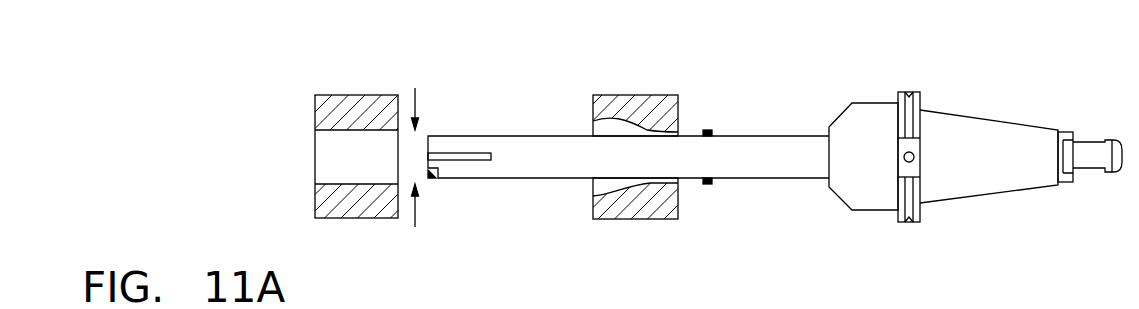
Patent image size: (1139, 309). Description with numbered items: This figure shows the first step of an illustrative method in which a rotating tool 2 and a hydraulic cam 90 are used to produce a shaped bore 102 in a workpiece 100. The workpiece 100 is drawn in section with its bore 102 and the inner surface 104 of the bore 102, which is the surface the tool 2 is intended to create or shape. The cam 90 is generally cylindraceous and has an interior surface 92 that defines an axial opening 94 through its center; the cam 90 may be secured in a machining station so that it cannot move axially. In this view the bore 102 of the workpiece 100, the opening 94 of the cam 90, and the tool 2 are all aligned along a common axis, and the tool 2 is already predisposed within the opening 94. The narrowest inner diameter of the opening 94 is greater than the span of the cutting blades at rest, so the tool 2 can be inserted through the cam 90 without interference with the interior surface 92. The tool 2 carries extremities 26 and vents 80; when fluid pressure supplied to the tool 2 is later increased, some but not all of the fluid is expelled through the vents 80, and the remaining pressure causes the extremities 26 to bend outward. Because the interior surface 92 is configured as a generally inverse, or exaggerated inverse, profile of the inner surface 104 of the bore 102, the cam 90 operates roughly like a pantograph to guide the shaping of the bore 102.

The tool 2 is at (1000, 80).
The extremities 26 is at (445, 142).
The vents 80 is at (722, 115).
The hydraulic cam 90 is at (616, 130).
The interior surface 92 is at (603, 185).
The axial opening 94 is at (580, 117).
The workpiece 100 is at (327, 136).
The bore 102 is at (303, 133).
The inner surface of bore 104 is at (337, 184).